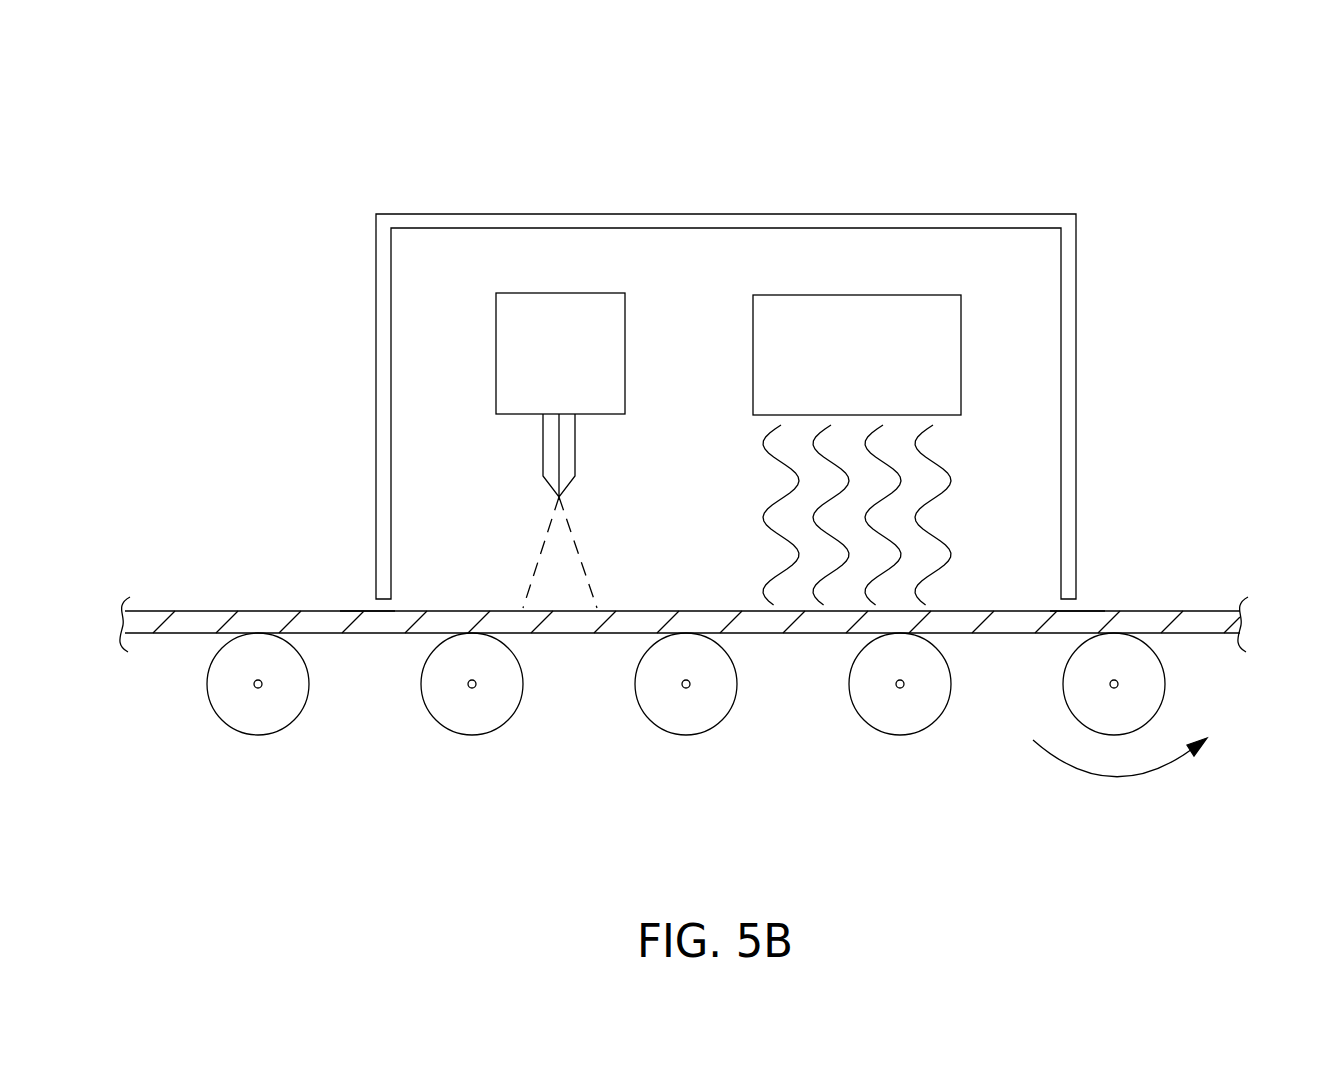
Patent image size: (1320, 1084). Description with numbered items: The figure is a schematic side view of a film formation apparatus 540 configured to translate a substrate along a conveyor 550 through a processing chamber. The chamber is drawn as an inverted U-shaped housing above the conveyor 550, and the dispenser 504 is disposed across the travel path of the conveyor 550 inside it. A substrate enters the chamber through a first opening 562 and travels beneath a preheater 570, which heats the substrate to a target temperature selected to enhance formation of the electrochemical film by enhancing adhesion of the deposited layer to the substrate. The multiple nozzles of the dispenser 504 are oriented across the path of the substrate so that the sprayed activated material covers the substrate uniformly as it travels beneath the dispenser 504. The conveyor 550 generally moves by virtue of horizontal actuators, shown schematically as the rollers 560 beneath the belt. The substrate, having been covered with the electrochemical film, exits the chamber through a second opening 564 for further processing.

The apparatus 540 is at (1108, 104).
The dispenser 504 is at (582, 366).
The preheater 570 is at (877, 366).
The conveyor 550 is at (170, 633).
The rollers 560 is at (278, 730).
The second opening 564 is at (372, 608).
The first opening 562 is at (1072, 609).